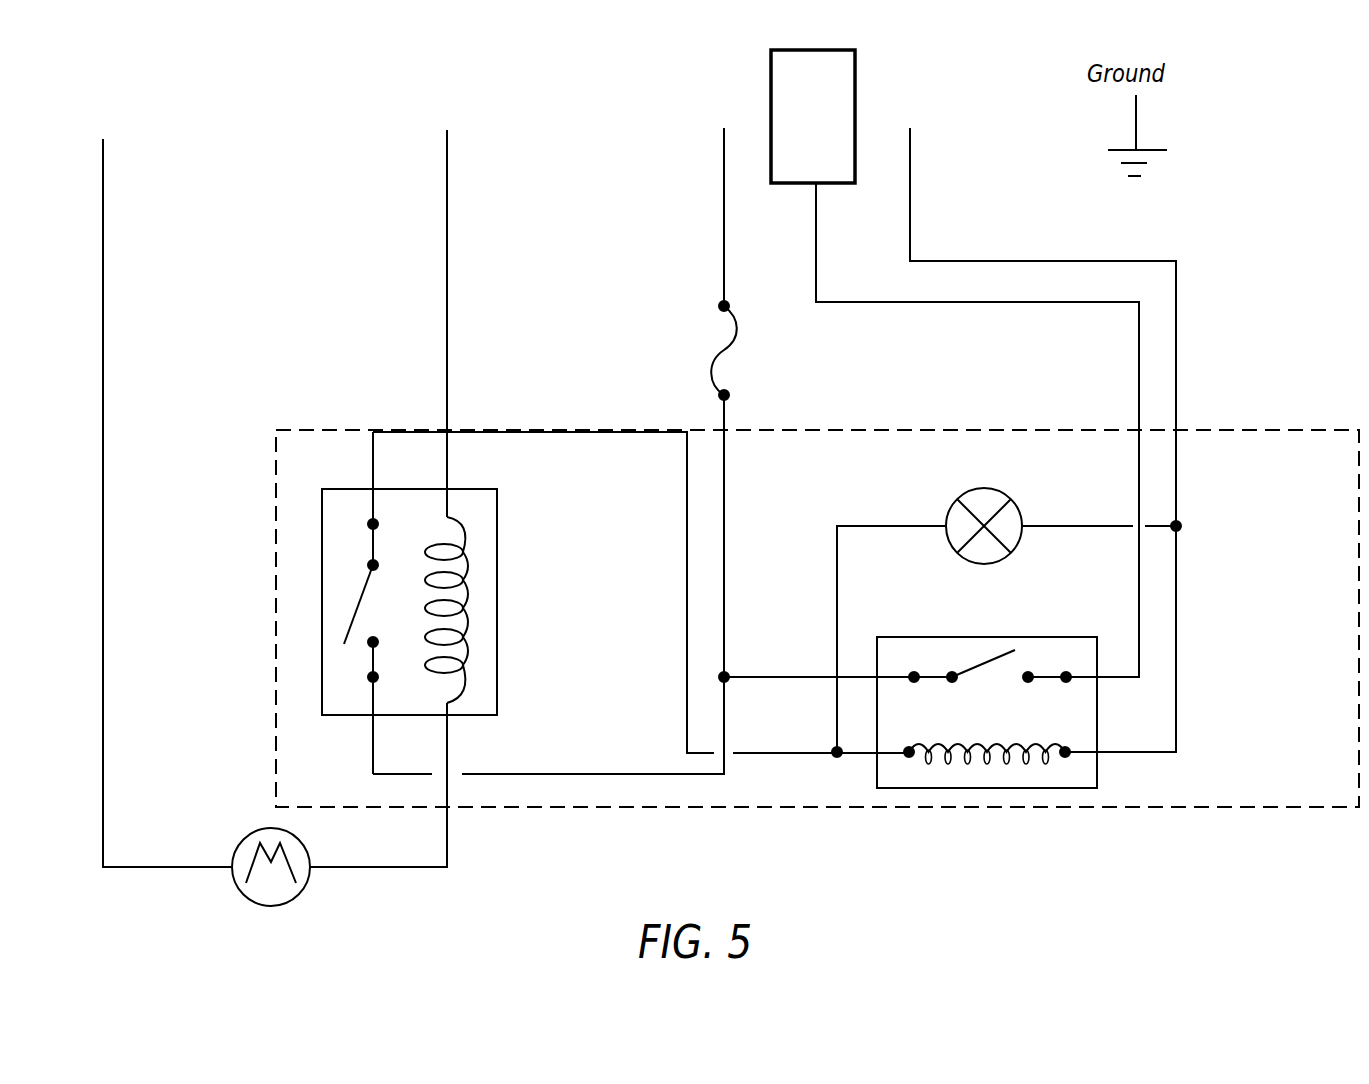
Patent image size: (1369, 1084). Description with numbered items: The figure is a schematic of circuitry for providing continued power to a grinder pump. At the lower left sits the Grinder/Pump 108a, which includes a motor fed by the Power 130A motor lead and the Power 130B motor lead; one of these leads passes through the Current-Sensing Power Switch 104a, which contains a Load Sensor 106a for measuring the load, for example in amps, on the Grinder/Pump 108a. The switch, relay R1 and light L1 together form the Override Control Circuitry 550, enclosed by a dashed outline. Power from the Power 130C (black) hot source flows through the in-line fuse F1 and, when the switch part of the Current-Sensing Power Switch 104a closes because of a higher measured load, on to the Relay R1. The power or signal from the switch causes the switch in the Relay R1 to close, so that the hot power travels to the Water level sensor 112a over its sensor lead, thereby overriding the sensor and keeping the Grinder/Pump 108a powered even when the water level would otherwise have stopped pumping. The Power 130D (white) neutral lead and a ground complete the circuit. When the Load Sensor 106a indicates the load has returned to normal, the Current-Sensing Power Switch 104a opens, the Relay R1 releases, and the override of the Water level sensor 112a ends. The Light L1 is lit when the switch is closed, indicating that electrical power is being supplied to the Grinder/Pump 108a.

The power motor lead 130A is at (407, 461).
The power motor lead 130B is at (137, 470).
The power source (Blk) hot 130C is at (692, 190).
The power (White) neutral 130D is at (1026, 399).
The water level sensor 112a is at (955, 363).
The current-sensing power switch 104a is at (337, 489).
The load sensor 106a is at (463, 623).
The grinder/pump 108a is at (258, 830).
The override control circuitry 550 is at (817, 618).
The in-line fuse F1 is at (742, 350).
The light L1 is at (1006, 605).
The relay R1 is at (915, 697).